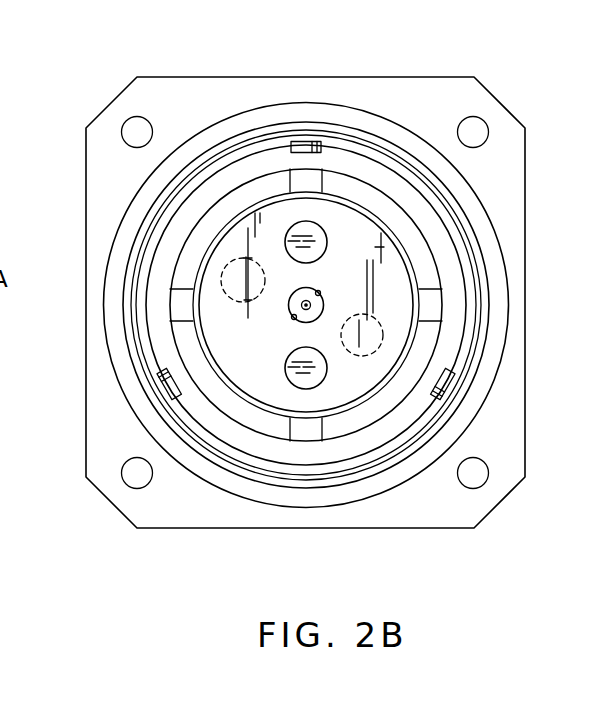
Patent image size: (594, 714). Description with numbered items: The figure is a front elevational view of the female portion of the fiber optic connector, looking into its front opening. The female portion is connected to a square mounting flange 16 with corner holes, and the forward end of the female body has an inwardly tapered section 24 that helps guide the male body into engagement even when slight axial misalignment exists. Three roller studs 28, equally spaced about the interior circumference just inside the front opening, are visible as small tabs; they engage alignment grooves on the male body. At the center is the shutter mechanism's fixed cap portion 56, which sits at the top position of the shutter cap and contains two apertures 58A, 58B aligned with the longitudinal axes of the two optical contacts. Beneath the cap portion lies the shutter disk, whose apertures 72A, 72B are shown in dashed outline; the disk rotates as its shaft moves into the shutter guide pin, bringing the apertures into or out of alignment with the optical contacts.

The mounting flange 16 is at (184, 93).
The inwardly tapered section 24 is at (247, 467).
The roller studs 28 is at (316, 142).
The fixed cap portion 56 is at (377, 246).
The aperture 58A is at (313, 232).
The aperture 58B is at (305, 378).
The aperture 72A is at (237, 272).
The aperture 72B is at (367, 333).